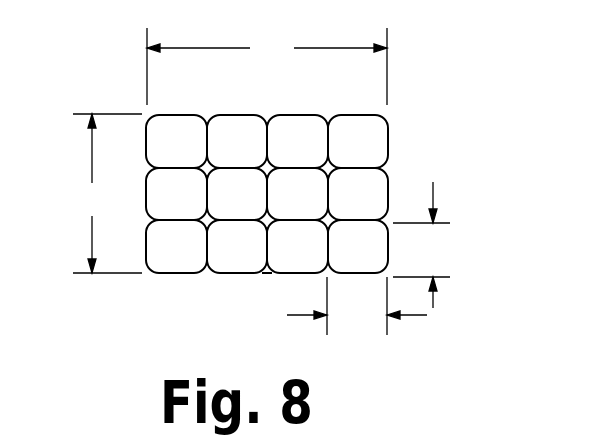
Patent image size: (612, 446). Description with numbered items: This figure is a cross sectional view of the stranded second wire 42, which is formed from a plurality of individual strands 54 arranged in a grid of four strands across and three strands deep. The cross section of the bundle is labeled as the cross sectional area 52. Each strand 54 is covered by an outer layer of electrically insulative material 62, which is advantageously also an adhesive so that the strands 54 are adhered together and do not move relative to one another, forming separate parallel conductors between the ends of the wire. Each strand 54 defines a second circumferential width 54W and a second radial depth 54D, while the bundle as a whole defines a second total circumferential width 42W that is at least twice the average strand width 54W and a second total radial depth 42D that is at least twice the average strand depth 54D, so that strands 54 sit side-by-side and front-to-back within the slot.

The second wire 42 is at (393, 132).
The first cross sectional area 52 is at (233, 265).
The individual strands 54 is at (162, 265).
The electrically insulative material 62 is at (270, 274).
The second total circumferential width 42W is at (267, 66).
The second total radial depth 42D is at (107, 193).
The second radial depth 54D is at (422, 245).
The second circumferential width 54W is at (357, 306).